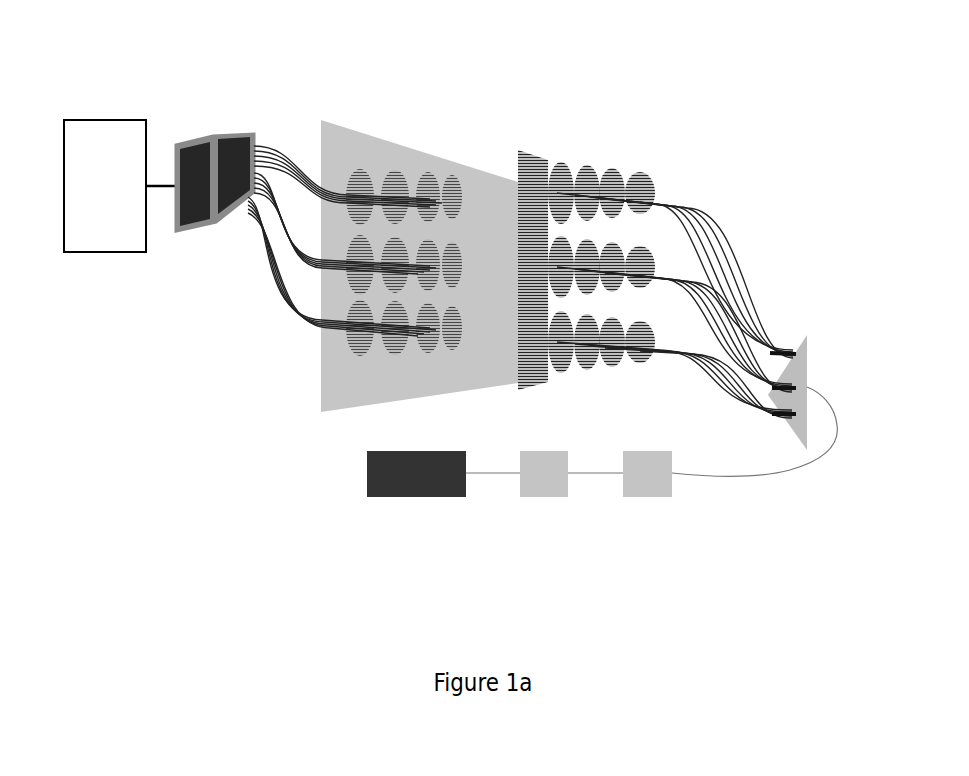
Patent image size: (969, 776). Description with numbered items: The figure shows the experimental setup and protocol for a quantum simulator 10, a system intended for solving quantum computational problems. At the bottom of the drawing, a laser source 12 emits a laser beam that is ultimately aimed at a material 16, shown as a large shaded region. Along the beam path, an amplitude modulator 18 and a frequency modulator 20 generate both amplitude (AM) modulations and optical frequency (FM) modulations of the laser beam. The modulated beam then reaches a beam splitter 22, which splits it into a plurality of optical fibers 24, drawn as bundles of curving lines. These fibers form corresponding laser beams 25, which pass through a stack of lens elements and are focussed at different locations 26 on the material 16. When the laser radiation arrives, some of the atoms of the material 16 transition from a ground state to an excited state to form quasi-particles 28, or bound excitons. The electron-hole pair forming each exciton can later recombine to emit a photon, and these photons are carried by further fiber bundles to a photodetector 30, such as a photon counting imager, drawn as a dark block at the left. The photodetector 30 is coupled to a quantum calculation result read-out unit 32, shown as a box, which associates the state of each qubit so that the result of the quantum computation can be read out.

The quantum simulator 10 is at (472, 636).
The laser source 12 is at (402, 487).
The material 16 is at (358, 140).
The amplitude modulator 18 is at (538, 488).
The frequency modulator 20 is at (633, 487).
The beam splitter 22 is at (802, 362).
The optical fibers 24 is at (728, 210).
The laser beams 25 is at (530, 195).
The locations 26 is at (365, 180).
The quasi-particles 28 is at (353, 340).
The photodetector 30 is at (229, 147).
The quantum calculation result read-out unit 32 is at (122, 252).